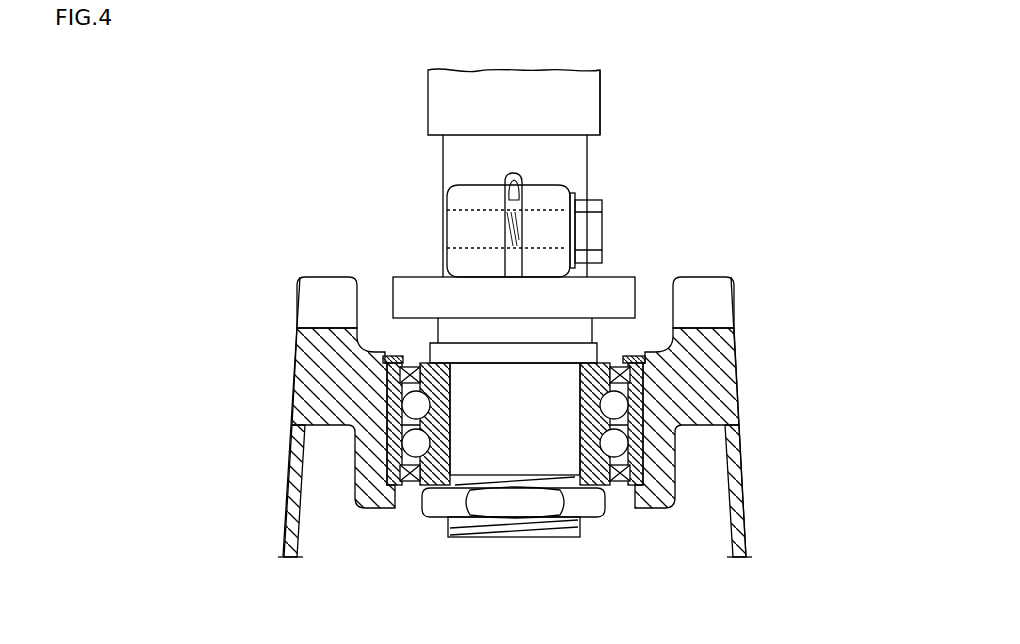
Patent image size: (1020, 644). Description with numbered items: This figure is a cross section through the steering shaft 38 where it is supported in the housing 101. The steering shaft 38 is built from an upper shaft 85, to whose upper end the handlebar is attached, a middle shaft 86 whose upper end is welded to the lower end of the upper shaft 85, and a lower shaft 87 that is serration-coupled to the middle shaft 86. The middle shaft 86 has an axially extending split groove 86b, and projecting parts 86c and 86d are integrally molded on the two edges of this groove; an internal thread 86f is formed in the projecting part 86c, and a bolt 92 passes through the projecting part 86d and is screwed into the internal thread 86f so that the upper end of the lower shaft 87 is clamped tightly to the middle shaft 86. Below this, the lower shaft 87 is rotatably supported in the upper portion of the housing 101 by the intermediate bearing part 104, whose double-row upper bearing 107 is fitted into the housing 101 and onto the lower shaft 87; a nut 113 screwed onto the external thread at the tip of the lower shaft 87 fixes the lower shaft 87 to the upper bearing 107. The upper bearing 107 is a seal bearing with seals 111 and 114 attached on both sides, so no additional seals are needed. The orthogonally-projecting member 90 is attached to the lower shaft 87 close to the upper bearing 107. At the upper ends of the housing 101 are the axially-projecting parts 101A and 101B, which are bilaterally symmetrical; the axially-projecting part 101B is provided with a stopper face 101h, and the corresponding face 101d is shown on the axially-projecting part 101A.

The steering shaft 38 is at (602, 85).
The upper shaft 85 is at (438, 88).
The middle shaft 86 is at (453, 155).
The split groove 86b is at (520, 177).
The projecting part 86c is at (462, 190).
The projecting part 86d is at (560, 185).
The internal thread 86f is at (467, 247).
The lower shaft 87 is at (495, 528).
The orthogonally-projecting member 90 is at (392, 293).
The bolt 92 is at (597, 230).
The housing 101 is at (290, 422).
The axially-projecting part 101A is at (297, 285).
The axially-projecting part 101B is at (737, 280).
The left boss portion 101d is at (307, 308).
The stopper face 101h is at (717, 303).
The intermediate bearing part 104 is at (345, 363).
The upper bearing 107 is at (643, 397).
The seal 111 is at (627, 375).
The nut 113 is at (437, 507).
The seal 114 is at (620, 483).